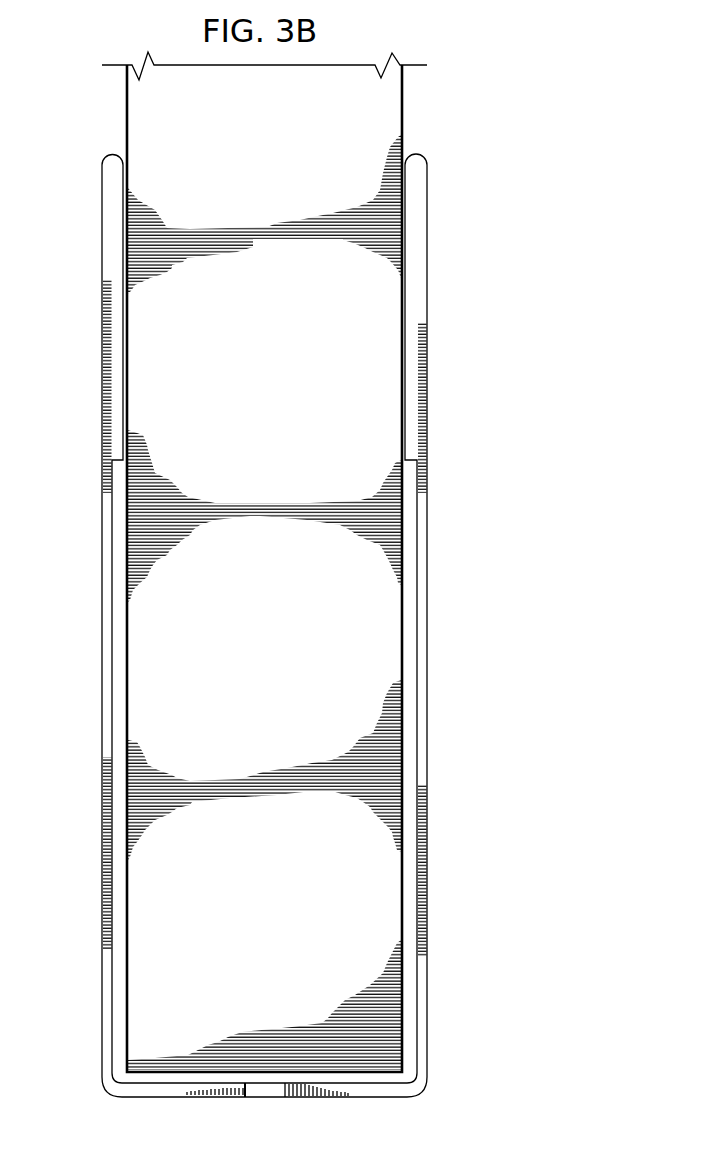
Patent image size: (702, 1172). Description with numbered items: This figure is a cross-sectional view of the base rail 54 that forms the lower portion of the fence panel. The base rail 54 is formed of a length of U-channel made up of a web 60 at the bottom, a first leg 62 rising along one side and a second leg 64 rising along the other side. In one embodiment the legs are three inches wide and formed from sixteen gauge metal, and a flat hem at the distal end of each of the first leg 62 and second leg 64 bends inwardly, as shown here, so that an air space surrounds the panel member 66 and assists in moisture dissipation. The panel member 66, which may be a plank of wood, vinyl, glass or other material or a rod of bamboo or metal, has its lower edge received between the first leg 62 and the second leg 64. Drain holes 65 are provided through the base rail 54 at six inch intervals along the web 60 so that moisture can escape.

The base rail 54 is at (536, 99).
The web 60 is at (175, 1098).
The first leg 62 is at (102, 522).
The second leg 64 is at (428, 518).
The drain holes 65 is at (263, 1090).
The panel member 66 is at (403, 113).